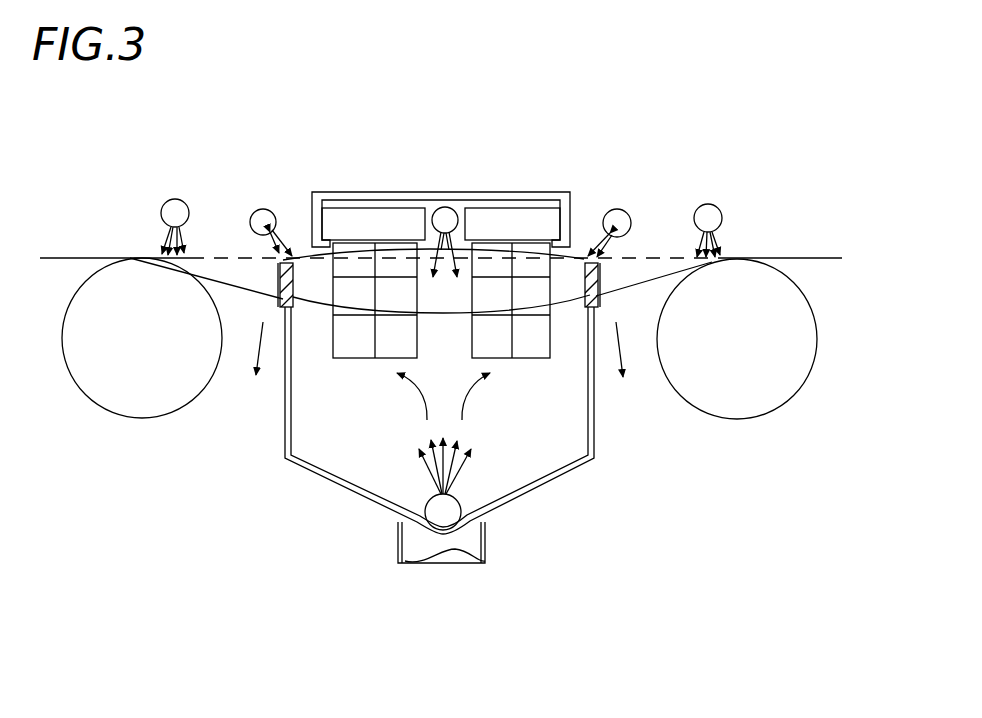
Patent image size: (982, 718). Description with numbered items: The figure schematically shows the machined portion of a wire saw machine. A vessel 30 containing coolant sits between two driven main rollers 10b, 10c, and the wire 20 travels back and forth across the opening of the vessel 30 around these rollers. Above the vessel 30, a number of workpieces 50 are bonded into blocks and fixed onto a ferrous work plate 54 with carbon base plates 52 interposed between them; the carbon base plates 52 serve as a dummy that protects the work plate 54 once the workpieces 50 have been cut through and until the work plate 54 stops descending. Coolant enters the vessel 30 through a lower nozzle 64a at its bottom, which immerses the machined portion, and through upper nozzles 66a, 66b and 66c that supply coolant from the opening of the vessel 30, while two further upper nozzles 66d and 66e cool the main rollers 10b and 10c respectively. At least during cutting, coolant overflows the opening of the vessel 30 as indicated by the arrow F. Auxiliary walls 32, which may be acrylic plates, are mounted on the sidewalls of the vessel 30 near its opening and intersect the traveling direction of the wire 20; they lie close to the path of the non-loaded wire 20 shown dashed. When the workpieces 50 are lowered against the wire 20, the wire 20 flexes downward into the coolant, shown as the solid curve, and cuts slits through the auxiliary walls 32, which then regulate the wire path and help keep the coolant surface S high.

The main roller 10b is at (122, 402).
The main roller 10c is at (747, 397).
The wire 20 is at (643, 285).
The vessel 30 is at (548, 483).
The auxiliary walls 32 is at (604, 273).
The workpieces 50 is at (537, 342).
The carbon base plates 52 is at (540, 215).
The work plate 54 is at (494, 193).
The lower nozzle 64a is at (452, 510).
The upper nozzle 66a is at (443, 207).
The upper nozzle 66b is at (263, 209).
The upper nozzle 66c is at (617, 209).
The upper nozzle 66d is at (175, 199).
The upper nozzle 66e is at (708, 204).
The surface of the coolant S is at (428, 250).
The arrow indicating coolant overflow F is at (255, 342).